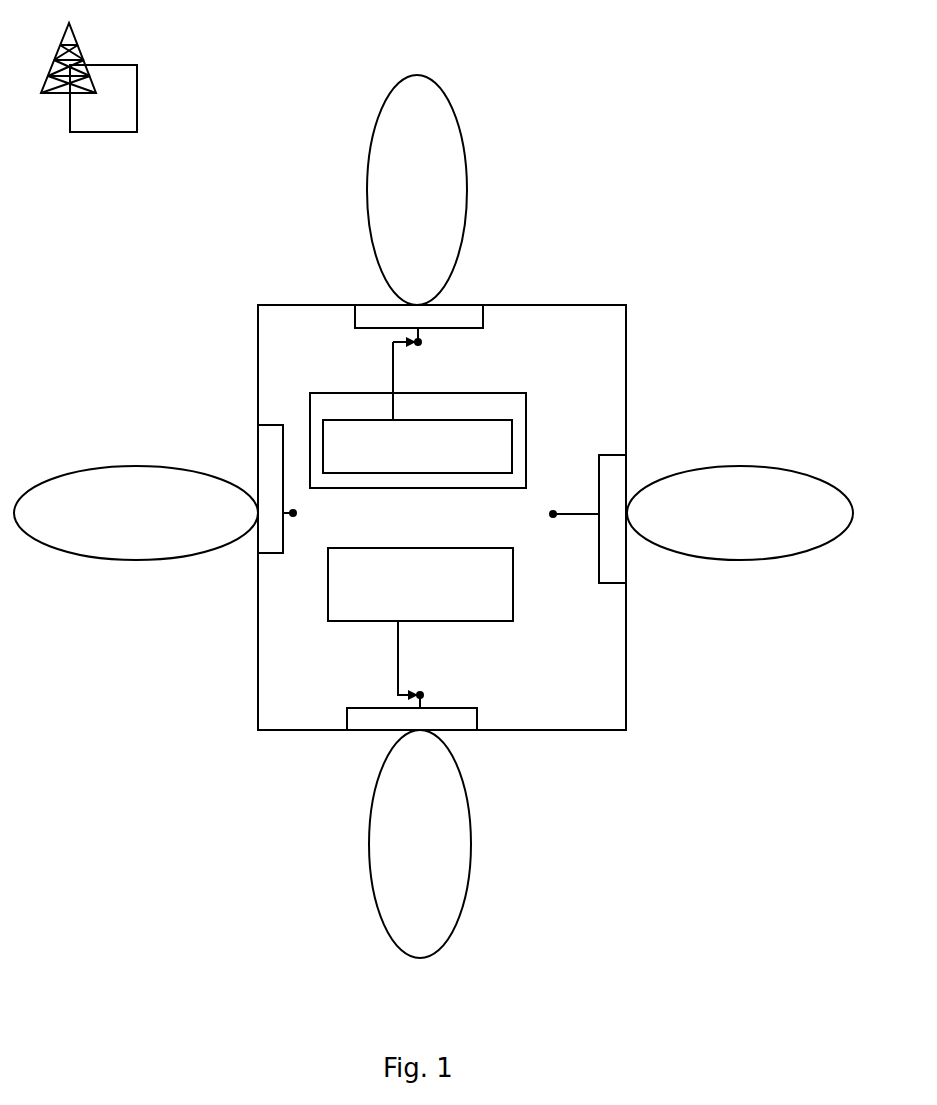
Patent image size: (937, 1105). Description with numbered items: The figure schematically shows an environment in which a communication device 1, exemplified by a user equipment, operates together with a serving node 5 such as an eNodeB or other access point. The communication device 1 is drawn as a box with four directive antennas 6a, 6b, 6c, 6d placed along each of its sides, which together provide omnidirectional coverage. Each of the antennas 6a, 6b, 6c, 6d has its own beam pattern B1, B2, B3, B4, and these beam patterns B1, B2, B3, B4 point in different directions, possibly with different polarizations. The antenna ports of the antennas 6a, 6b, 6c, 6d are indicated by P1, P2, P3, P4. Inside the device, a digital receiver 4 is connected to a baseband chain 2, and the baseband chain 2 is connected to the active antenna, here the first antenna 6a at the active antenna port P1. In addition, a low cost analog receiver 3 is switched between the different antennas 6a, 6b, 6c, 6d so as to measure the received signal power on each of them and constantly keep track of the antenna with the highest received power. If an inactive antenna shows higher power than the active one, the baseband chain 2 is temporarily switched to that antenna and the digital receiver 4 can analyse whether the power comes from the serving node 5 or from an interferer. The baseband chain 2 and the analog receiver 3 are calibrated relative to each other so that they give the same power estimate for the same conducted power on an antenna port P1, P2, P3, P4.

The communication device 1 is at (562, 305).
The baseband chain 2 is at (403, 463).
The analog receiver 3 is at (448, 645).
The digital receiver 4 is at (503, 408).
The serving node 5 is at (118, 87).
The directive antenna 6a is at (367, 313).
The directive antenna 6b is at (627, 565).
The directive antenna 6c is at (472, 730).
The directive antenna 6d is at (261, 555).
The antenna port P1 is at (420, 340).
The antenna port P2 is at (573, 514).
The antenna port P3 is at (421, 693).
The antenna port P4 is at (294, 514).
The beam pattern B1 is at (417, 190).
The beam pattern B2 is at (740, 513).
The beam pattern B3 is at (420, 844).
The beam pattern B4 is at (136, 513).